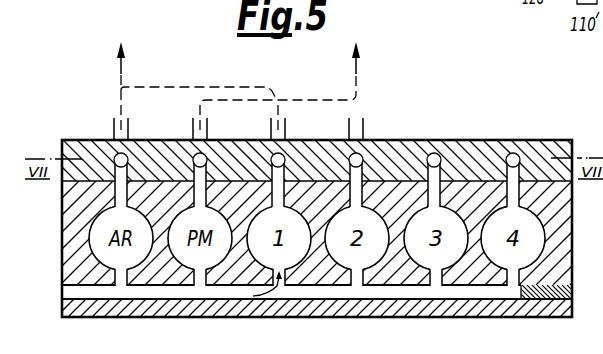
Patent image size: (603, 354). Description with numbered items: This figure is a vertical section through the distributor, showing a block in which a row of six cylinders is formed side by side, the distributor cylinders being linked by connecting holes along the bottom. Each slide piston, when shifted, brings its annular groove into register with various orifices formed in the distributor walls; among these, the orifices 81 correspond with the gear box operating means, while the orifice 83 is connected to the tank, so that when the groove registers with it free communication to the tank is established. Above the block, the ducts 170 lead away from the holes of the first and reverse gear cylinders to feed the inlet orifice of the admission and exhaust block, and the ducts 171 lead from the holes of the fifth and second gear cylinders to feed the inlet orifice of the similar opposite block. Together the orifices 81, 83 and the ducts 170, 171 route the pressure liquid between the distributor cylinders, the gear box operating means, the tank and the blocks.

The ducts 170 is at (119, 61).
The ducts 171 is at (357, 72).
The orifices 81 is at (72, 293).
The orifice 83 is at (503, 295).